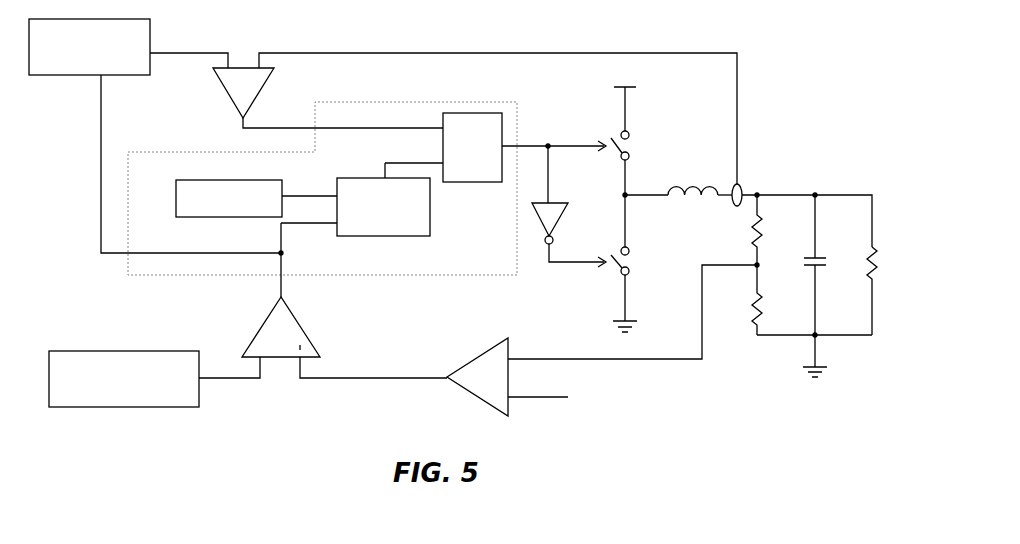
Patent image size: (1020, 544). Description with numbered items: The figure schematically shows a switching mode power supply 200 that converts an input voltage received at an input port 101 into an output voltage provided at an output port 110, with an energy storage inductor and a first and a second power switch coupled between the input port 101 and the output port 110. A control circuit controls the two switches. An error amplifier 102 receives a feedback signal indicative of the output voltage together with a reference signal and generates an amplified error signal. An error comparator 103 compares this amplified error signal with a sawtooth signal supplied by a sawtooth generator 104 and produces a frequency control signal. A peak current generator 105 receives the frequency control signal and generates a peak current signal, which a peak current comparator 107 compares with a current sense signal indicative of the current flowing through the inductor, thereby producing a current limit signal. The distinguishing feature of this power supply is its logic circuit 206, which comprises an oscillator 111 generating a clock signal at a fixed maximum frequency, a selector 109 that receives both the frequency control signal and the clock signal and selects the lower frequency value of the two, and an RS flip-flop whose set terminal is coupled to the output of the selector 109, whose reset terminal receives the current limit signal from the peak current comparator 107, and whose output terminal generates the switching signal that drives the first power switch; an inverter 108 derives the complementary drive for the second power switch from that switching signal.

The switching mode power supply 200 is at (810, 69).
The peak current generator 105 is at (64, 78).
The peak current comparator 107 is at (231, 100).
The logic circuit 206 is at (461, 102).
The inverter 108 is at (566, 216).
The input port 101 is at (632, 98).
The output port 110 is at (807, 210).
The oscillator 111 is at (170, 202).
The selector 109 is at (432, 230).
The error comparator 103 is at (297, 322).
The sawtooth generator 104 is at (134, 351).
The error amplifier 102 is at (468, 362).